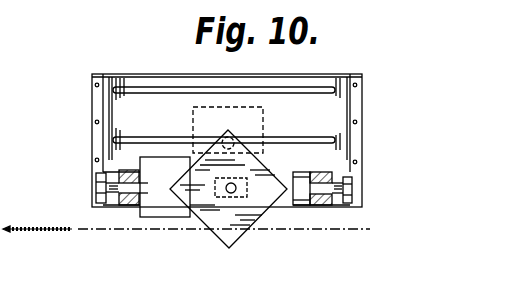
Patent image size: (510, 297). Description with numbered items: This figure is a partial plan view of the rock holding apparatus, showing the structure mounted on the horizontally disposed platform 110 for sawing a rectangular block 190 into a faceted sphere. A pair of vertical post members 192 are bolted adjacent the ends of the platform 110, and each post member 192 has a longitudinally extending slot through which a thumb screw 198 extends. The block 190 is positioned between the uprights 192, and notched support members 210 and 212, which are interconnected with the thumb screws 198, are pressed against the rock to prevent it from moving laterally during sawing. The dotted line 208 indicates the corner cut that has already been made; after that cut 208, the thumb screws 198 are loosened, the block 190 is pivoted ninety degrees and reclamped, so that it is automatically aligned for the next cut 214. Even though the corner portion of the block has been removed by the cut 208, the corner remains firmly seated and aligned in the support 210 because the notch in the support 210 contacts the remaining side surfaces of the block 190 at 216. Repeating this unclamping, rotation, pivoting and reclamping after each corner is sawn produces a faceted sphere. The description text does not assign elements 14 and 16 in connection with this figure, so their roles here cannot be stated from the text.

The feed direction 14 is at (28, 227).
The support frame 16 is at (87, 92).
The horizontally disposed platform 110 is at (330, 109).
The rectangular block 190 is at (262, 165).
The vertical post members 192 is at (120, 207).
The thumb screws 198 is at (356, 184).
The corner cut 208 is at (193, 165).
The notched support member 210 is at (162, 208).
The notched support member 212 is at (298, 206).
The cut 214 is at (238, 250).
The remaining side surfaces of block 216 is at (181, 215).